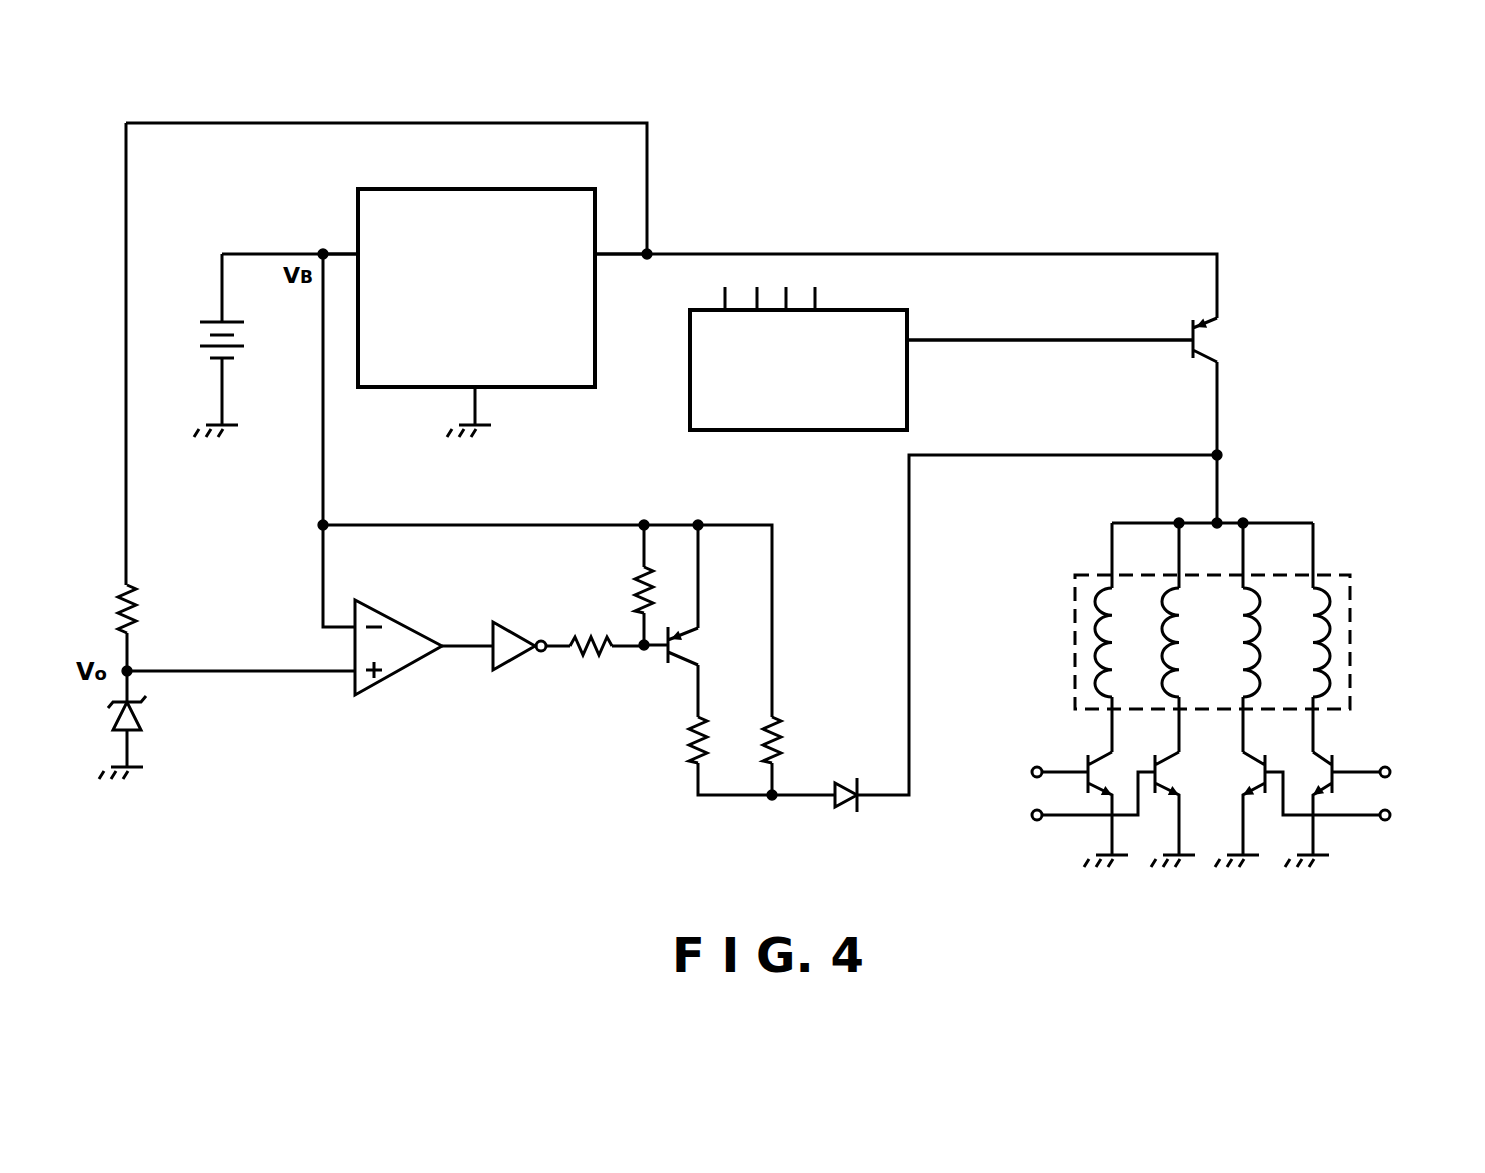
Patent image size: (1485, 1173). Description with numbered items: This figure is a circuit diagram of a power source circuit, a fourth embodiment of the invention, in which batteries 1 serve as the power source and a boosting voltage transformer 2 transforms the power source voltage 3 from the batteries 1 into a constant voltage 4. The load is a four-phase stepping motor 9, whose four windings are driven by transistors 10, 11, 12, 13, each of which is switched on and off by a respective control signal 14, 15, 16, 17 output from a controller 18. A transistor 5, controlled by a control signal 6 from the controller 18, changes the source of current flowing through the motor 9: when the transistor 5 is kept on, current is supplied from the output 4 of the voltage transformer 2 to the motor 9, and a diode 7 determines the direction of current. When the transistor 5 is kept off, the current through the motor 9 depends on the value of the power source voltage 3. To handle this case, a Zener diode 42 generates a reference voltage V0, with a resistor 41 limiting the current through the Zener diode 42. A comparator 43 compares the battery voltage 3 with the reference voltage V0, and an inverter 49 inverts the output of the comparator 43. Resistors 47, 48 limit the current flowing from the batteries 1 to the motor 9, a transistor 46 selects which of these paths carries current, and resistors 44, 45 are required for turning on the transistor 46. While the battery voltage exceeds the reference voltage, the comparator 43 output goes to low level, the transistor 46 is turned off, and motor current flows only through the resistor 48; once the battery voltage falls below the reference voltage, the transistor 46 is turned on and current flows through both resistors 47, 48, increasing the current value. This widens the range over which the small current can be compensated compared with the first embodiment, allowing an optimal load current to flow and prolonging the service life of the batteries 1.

The batteries 1 is at (200, 335).
The voltage transformer 2 is at (486, 189).
The power source voltage 3 is at (355, 249).
The constant voltage 4 is at (600, 248).
The transistor 5 is at (1205, 333).
The control signal 6 is at (1133, 341).
The diode 7 is at (845, 812).
The stepping motor 9 is at (1352, 604).
The transistor 10 is at (1105, 751).
The transistor 11 is at (1170, 751).
The transistor 12 is at (1247, 766).
The transistor 13 is at (1316, 762).
The control signal 14 is at (1031, 773).
The control signal 15 is at (1031, 815).
The control signal 16 is at (1430, 811).
The control signal 17 is at (1430, 766).
The controller 18 is at (852, 431).
The resistor 41 is at (140, 606).
The Zener diode 42 is at (145, 716).
The comparator 43 is at (405, 620).
The resistor 44 is at (635, 586).
The resistor 45 is at (585, 657).
The transistor 46 is at (690, 634).
The resistor 47 is at (688, 736).
The resistor 48 is at (762, 741).
The inverter 49 is at (505, 671).